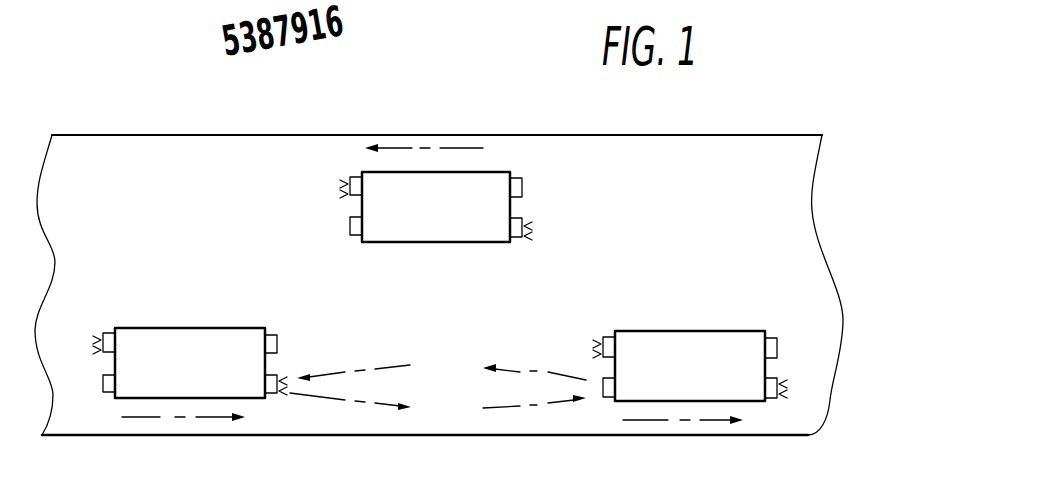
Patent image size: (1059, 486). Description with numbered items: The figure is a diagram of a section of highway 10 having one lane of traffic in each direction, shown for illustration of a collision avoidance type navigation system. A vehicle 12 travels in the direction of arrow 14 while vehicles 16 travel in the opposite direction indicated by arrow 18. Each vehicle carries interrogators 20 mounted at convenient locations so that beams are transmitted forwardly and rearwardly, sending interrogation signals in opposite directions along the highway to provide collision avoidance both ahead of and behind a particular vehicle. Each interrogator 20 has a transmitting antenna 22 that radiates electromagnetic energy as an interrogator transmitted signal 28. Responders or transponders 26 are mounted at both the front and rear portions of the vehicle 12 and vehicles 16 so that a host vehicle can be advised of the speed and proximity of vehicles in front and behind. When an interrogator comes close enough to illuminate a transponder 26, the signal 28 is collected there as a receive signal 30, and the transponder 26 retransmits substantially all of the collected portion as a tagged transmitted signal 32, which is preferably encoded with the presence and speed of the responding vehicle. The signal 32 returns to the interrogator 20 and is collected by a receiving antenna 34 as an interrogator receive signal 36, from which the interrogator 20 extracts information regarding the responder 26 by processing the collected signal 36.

The highway 10 is at (383, 437).
The vehicle 12 is at (488, 172).
The arrow 14 is at (405, 148).
The vehicles 16 is at (177, 328).
The arrow 18 is at (148, 420).
The interrogator 20 is at (355, 176).
The transmitting antenna 22 is at (337, 178).
The transponder 26 is at (348, 227).
The interrogator transmitted signal 28 is at (302, 376).
The receive signal 30 is at (493, 407).
The tagged transmitted signal 32 is at (510, 367).
The receiving antenna 34 is at (338, 193).
The interrogator receive signal 36 is at (382, 366).